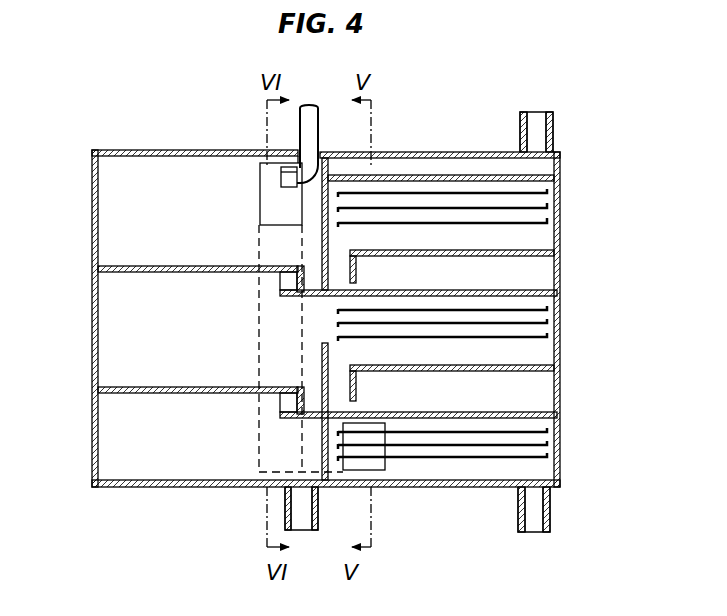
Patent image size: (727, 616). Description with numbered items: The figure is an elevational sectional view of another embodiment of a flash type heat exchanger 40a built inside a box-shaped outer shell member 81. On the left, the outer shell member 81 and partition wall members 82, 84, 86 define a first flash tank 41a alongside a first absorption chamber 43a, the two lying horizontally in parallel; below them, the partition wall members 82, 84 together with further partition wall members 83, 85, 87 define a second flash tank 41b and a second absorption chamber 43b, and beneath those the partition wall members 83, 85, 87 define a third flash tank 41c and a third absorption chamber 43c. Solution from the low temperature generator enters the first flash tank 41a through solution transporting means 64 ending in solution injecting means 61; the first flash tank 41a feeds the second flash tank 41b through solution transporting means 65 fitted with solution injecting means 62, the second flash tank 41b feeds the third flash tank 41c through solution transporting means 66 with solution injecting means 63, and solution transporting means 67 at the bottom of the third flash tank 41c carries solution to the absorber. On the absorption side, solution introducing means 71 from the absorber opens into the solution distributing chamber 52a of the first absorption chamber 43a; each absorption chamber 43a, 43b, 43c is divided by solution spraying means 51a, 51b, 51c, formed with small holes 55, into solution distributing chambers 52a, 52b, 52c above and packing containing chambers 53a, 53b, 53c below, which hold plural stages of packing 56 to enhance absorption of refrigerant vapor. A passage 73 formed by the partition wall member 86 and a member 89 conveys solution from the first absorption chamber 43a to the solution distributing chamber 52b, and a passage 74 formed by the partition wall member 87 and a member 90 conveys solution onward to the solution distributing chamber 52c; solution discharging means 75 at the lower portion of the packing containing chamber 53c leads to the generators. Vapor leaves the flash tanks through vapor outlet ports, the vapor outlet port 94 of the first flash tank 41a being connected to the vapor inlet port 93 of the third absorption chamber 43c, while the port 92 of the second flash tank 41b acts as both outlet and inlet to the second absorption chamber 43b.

The flash type heat exchanger 40a is at (411, 108).
The outer shell member 81 is at (97, 150).
The first flash tank 41a is at (147, 201).
The second flash tank 41b is at (160, 313).
The third flash tank 41c is at (160, 422).
The partition wall member 82 is at (145, 266).
The partition wall member 83 is at (145, 387).
The solution injecting means 61 is at (281, 179).
The solution injecting means 62 is at (283, 287).
The solution injecting means 63 is at (283, 408).
The solution transporting means 64 is at (309, 107).
The solution transporting means 65 is at (316, 272).
The solution transporting means 66 is at (316, 398).
The solution transporting means 67 is at (307, 508).
The solution introducing means 71 is at (540, 122).
The solution discharging means 75 is at (540, 512).
The passage 73 is at (333, 266).
The passage 74 is at (336, 386).
The partition wall member 84 is at (483, 251).
The partition wall member 85 is at (490, 366).
The partition wall member 86 is at (322, 213).
The partition wall member 87 is at (327, 457).
The member 89 is at (357, 272).
The member 90 is at (357, 388).
The vapor outlet port 92 is at (282, 332).
The vapor inlet port 93 is at (377, 470).
The vapor outlet port 94 is at (262, 196).
The small holes 55 is at (348, 172).
The packing 56 is at (545, 203).
The solution spraying means 51a is at (413, 174).
The solution spraying means 51b is at (429, 292).
The solution spraying means 51c is at (430, 411).
The solution distributing chamber 52a is at (478, 168).
The solution distributing chamber 52b is at (540, 266).
The solution distributing chamber 52c is at (540, 388).
The packing containing chamber 53a is at (508, 239).
The packing containing chamber 53b is at (508, 354).
The packing containing chamber 53c is at (508, 471).
The first absorption chamber 43a is at (548, 194).
The second absorption chamber 43b is at (548, 320).
The third absorption chamber 43c is at (548, 446).